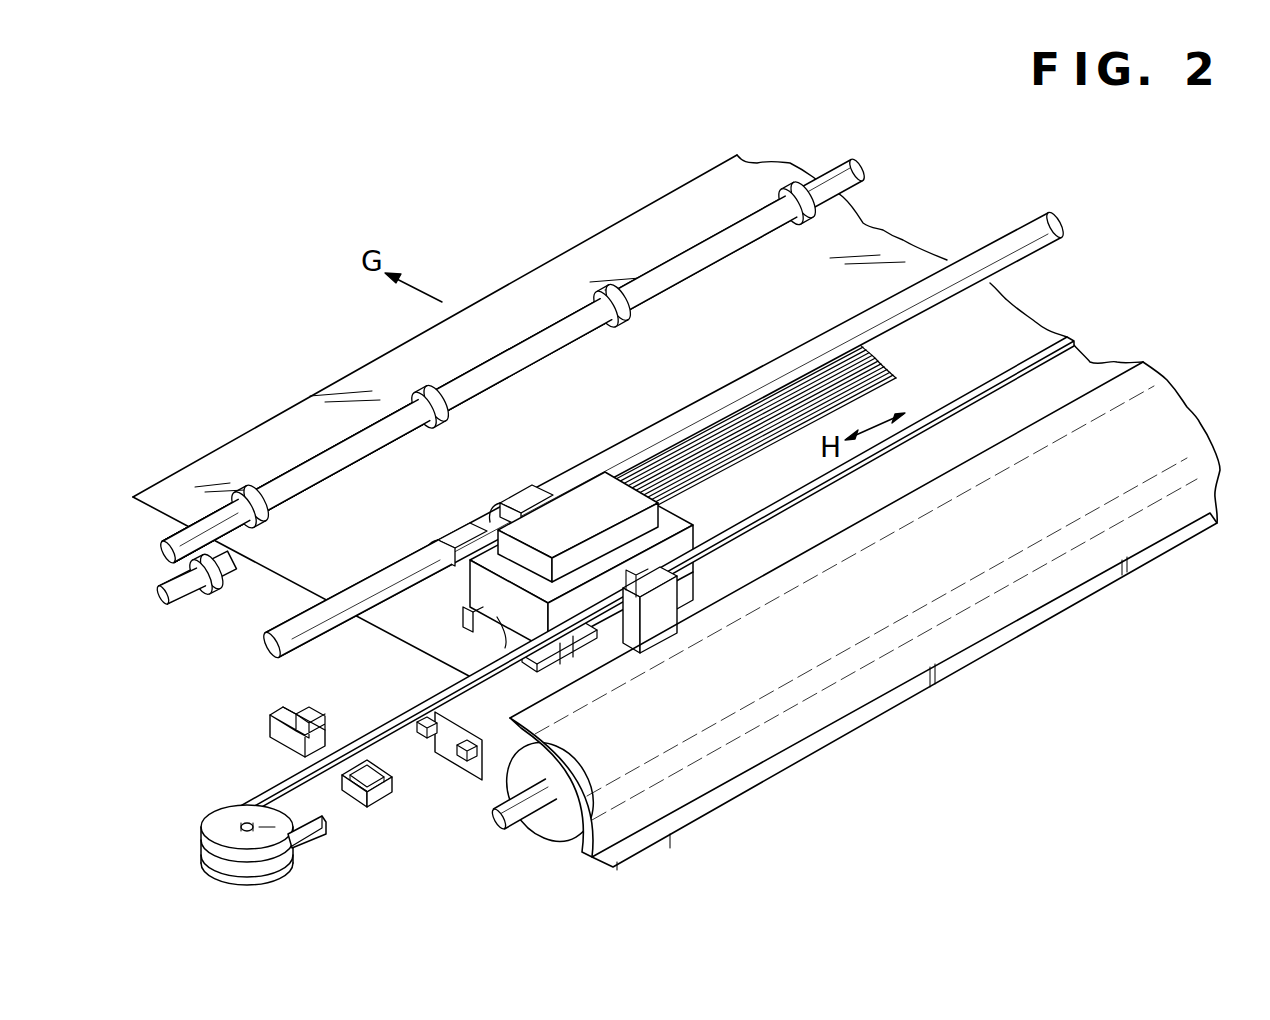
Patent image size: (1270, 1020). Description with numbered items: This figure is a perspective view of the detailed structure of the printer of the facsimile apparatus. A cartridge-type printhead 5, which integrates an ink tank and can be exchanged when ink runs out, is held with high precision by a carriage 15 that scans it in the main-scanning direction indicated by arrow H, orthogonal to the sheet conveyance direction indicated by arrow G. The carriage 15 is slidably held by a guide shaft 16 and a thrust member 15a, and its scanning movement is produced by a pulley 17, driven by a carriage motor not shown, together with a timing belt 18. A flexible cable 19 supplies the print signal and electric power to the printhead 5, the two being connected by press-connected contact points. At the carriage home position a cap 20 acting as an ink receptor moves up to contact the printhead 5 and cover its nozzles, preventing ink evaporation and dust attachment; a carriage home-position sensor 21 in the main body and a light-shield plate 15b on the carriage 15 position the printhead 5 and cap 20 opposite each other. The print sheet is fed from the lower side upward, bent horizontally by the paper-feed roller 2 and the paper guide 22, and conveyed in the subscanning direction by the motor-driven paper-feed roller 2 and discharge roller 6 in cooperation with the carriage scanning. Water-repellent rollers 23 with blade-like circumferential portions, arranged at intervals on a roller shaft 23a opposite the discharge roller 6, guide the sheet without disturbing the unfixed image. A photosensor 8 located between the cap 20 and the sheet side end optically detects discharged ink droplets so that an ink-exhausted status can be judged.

The paper-feed roller 2 is at (552, 830).
The printhead 5 is at (584, 503).
The discharge roller 6 is at (235, 568).
The photosensor 8 is at (458, 760).
The carriage 15 is at (679, 516).
The thrust member 15a is at (663, 633).
The light-shield plate 15b is at (478, 638).
The guide shaft 16 is at (1003, 240).
The pulley 17 is at (223, 820).
The timing belt 18 is at (822, 479).
The flexible cable 19 is at (880, 367).
The cap 20 is at (382, 795).
The carriage home-position sensor 21 is at (263, 726).
The paper guide 22 is at (790, 720).
The rollers 23 is at (450, 413).
The roller shaft 23a is at (862, 182).